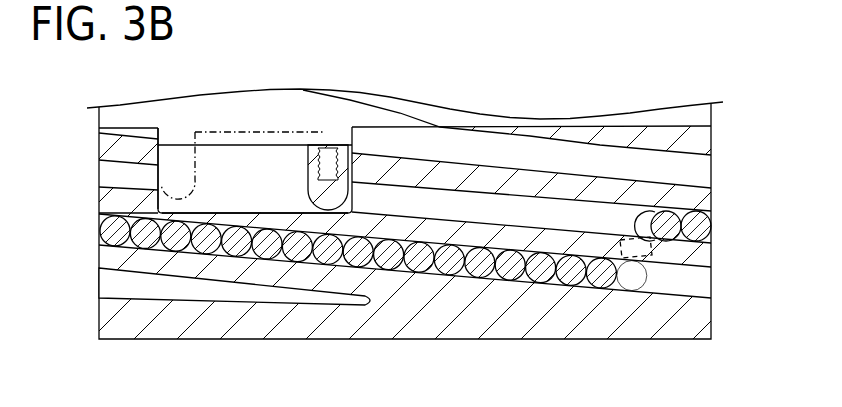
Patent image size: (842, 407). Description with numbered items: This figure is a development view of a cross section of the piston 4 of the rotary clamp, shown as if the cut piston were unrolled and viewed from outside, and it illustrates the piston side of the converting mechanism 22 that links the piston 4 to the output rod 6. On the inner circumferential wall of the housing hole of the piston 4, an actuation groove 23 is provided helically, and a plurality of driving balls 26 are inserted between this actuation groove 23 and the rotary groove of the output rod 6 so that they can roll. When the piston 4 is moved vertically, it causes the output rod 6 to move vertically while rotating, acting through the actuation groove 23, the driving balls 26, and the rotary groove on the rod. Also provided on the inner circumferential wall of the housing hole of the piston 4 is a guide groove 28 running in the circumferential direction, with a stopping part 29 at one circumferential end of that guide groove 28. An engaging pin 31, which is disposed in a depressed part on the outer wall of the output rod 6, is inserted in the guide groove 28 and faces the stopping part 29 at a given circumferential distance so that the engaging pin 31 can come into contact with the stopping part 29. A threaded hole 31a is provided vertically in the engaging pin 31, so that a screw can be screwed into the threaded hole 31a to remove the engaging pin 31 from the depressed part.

The piston 4 is at (540, 133).
The output rod 6 is at (266, 90).
The converting mechanism 22 is at (333, 271).
The actuation groove 23 is at (433, 274).
The driving balls 26 is at (700, 227).
The guide groove 28 is at (240, 213).
The stopping part 29 is at (160, 155).
The engaging pin 31 is at (208, 133).
The threaded hole 31a is at (332, 150).